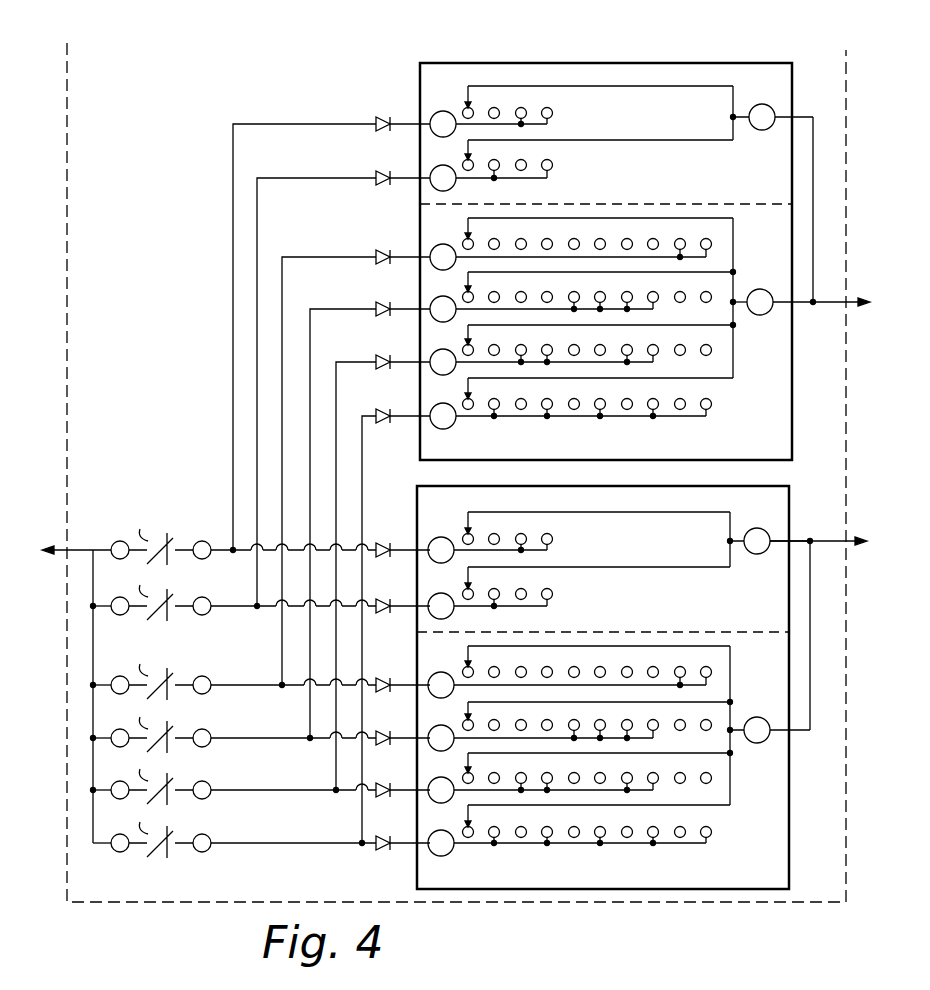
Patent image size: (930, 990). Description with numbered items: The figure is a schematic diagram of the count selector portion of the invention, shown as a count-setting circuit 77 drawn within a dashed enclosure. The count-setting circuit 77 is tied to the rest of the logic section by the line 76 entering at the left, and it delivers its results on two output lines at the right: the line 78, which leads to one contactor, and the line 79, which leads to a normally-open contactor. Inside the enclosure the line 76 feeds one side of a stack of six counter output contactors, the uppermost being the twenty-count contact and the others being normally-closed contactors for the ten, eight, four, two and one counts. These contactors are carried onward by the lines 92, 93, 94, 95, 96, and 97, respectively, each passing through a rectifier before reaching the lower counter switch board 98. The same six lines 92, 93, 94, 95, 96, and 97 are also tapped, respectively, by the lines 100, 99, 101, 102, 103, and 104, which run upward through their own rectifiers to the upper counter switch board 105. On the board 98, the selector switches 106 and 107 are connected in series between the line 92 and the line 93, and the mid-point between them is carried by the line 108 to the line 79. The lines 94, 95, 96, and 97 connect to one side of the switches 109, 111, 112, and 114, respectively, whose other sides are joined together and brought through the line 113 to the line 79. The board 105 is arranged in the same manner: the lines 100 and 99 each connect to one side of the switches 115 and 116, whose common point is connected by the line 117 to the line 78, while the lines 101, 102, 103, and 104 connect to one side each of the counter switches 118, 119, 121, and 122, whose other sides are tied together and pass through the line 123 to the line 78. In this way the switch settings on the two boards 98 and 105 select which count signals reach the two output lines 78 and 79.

The line 76 is at (61, 553).
The count-setting circuit 77 is at (68, 227).
The line 78 is at (830, 308).
The line 79 is at (823, 538).
The line 92 is at (218, 545).
The line 93 is at (235, 604).
The line 94 is at (242, 683).
The line 95 is at (243, 737).
The line 96 is at (244, 789).
The line 97 is at (244, 842).
The counter switch board 98 is at (789, 866).
The line 99 is at (257, 358).
The line 100 is at (233, 350).
The line 101 is at (282, 383).
The line 102 is at (310, 398).
The line 103 is at (336, 420).
The line 104 is at (362, 455).
The counter switch board 105 is at (792, 402).
The selector switch 106 is at (553, 539).
The selector switch 107 is at (553, 594).
The line 108 is at (742, 553).
The switch 109 is at (467, 661).
The switch 111 is at (467, 713).
The switch 112 is at (467, 766).
The line 113 is at (771, 740).
The switch 114 is at (467, 822).
The switch 115 is at (553, 113).
The switch 116 is at (553, 165).
The line 117 is at (774, 126).
The counter switch 118 is at (467, 230).
The counter switch 119 is at (467, 285).
The counter switch 121 is at (467, 338).
The counter switch 122 is at (467, 392).
The line 123 is at (773, 312).